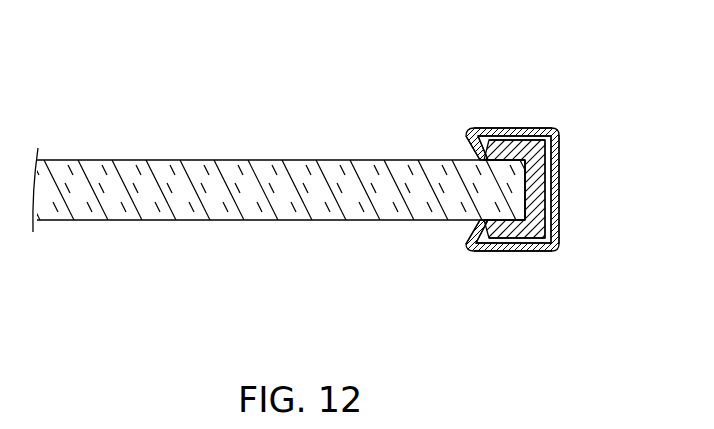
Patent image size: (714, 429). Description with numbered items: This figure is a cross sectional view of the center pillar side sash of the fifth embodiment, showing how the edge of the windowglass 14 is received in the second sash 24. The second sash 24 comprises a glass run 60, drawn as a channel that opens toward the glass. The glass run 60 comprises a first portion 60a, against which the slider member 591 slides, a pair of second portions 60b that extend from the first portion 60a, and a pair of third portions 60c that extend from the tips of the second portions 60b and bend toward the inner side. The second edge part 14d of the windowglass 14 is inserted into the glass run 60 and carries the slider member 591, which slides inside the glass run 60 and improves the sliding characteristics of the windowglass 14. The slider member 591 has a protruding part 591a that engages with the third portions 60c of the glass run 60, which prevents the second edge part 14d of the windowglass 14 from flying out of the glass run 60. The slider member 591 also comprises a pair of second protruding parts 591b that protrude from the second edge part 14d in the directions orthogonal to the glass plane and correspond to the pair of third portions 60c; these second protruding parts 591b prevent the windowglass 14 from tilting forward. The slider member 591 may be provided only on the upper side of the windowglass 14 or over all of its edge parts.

The windowglass 14 is at (186, 158).
The second edge part 14d is at (527, 166).
The second sash 24 is at (551, 108).
The glass run 60 is at (562, 145).
The first portion 60a is at (559, 195).
The second portions 60b is at (513, 128).
The third portions 60c is at (470, 134).
The slider member 591 is at (551, 129).
The protruding part 591a is at (547, 224).
The second protruding parts 591b is at (491, 138).